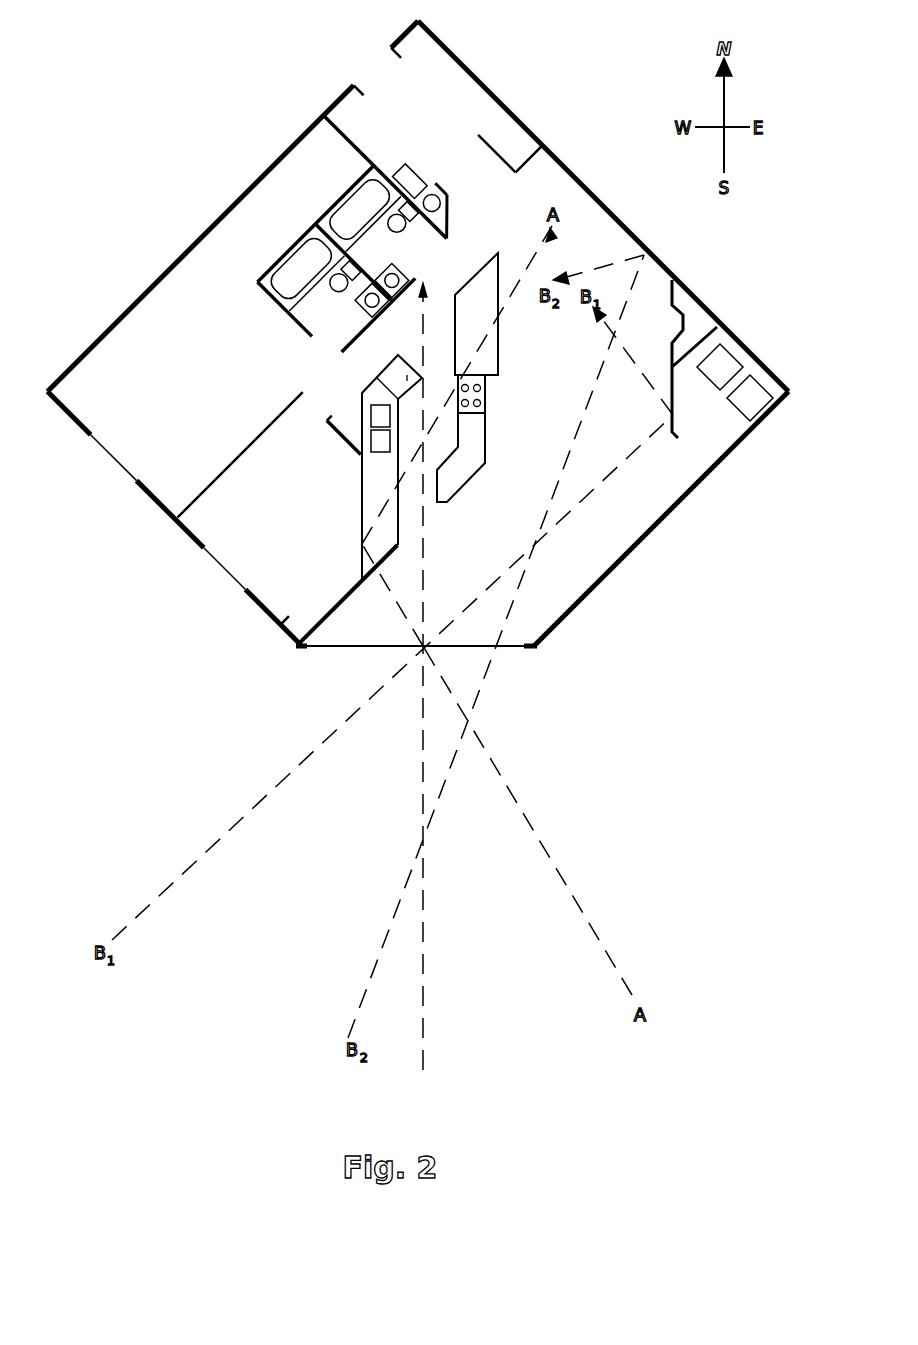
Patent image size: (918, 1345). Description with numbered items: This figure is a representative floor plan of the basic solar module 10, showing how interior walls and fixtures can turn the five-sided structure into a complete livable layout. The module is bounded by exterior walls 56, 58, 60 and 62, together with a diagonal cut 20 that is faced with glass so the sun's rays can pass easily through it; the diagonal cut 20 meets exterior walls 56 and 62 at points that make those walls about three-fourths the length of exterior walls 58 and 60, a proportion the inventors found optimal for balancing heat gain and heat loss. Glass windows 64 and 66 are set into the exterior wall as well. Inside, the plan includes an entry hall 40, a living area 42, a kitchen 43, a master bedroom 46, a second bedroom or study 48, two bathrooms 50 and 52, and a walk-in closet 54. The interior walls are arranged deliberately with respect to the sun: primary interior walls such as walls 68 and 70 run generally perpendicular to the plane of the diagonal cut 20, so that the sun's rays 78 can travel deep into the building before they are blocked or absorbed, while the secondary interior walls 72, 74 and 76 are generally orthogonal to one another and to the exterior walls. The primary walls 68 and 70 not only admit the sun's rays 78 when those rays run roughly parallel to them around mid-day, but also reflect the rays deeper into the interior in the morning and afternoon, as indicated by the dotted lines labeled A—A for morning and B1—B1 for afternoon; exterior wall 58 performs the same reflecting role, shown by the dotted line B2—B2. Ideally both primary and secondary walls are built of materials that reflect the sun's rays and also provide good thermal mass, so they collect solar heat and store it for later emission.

The solar module 10 is at (417, 357).
The diagonal cut 20 is at (511, 649).
The entry hall 40 is at (410, 129).
The living area 42 is at (518, 411).
The kitchen 43 is at (425, 396).
The master bedroom 46 is at (174, 391).
The second bedroom or study 48 is at (259, 531).
The bathroom 50 is at (314, 323).
The bathroom 52 is at (366, 259).
The walk-in closet 54 is at (276, 207).
The exterior wall 56 is at (628, 555).
The exterior wall 58 is at (617, 216).
The exterior wall 60 is at (189, 251).
The exterior wall 62 is at (165, 513).
The glass window 64 is at (113, 462).
The glass window 66 is at (224, 571).
The primary interior wall 68 is at (486, 440).
The primary interior wall 70 is at (362, 495).
The secondary interior wall 72 is at (341, 601).
The secondary interior wall 74 is at (403, 312).
The secondary interior wall 76 is at (512, 171).
The sun's rays 78 is at (274, 787).